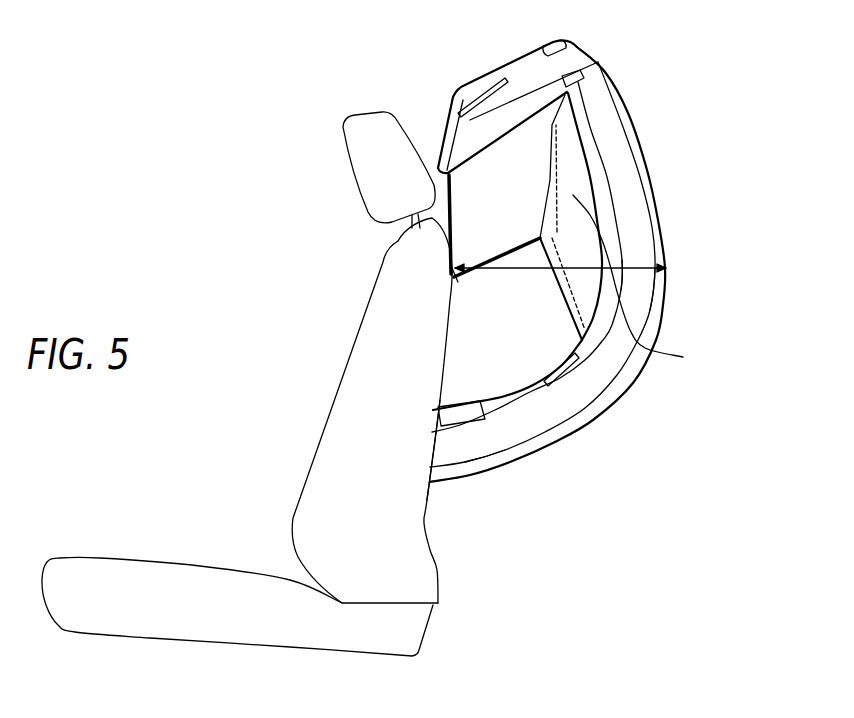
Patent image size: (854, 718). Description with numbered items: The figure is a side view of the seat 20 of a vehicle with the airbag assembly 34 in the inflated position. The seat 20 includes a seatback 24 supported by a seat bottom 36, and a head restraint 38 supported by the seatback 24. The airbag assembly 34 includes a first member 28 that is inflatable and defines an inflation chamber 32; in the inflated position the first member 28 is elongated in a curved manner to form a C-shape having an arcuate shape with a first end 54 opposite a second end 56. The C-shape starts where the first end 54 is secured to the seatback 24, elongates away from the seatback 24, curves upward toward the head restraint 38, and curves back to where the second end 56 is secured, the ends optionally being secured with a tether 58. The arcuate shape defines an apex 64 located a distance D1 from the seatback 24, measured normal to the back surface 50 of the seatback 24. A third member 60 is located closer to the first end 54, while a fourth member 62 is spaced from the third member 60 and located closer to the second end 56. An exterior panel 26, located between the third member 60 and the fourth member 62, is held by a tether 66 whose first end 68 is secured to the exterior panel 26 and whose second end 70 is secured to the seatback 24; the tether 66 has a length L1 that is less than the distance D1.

The seat 20 is at (222, 262).
The seatback 24 is at (333, 478).
The exterior panel 26 is at (573, 197).
The first member 28 is at (640, 288).
The inflation chamber 32 is at (640, 242).
The airbag assembly 34 is at (588, 267).
The seat bottom 36 is at (145, 617).
The head restraint 38 is at (365, 143).
The back surface 50 is at (427, 520).
The first end 54 is at (487, 443).
The second end 56 is at (565, 83).
The tether 58 is at (455, 215).
The third member 60 is at (513, 403).
The fourth member 62 is at (527, 62).
The apex 64 is at (666, 268).
The tether 66 is at (495, 267).
The first end 68 is at (537, 243).
The second end 70 is at (458, 282).
The distance D1 is at (642, 285).
The length L1 is at (537, 222).